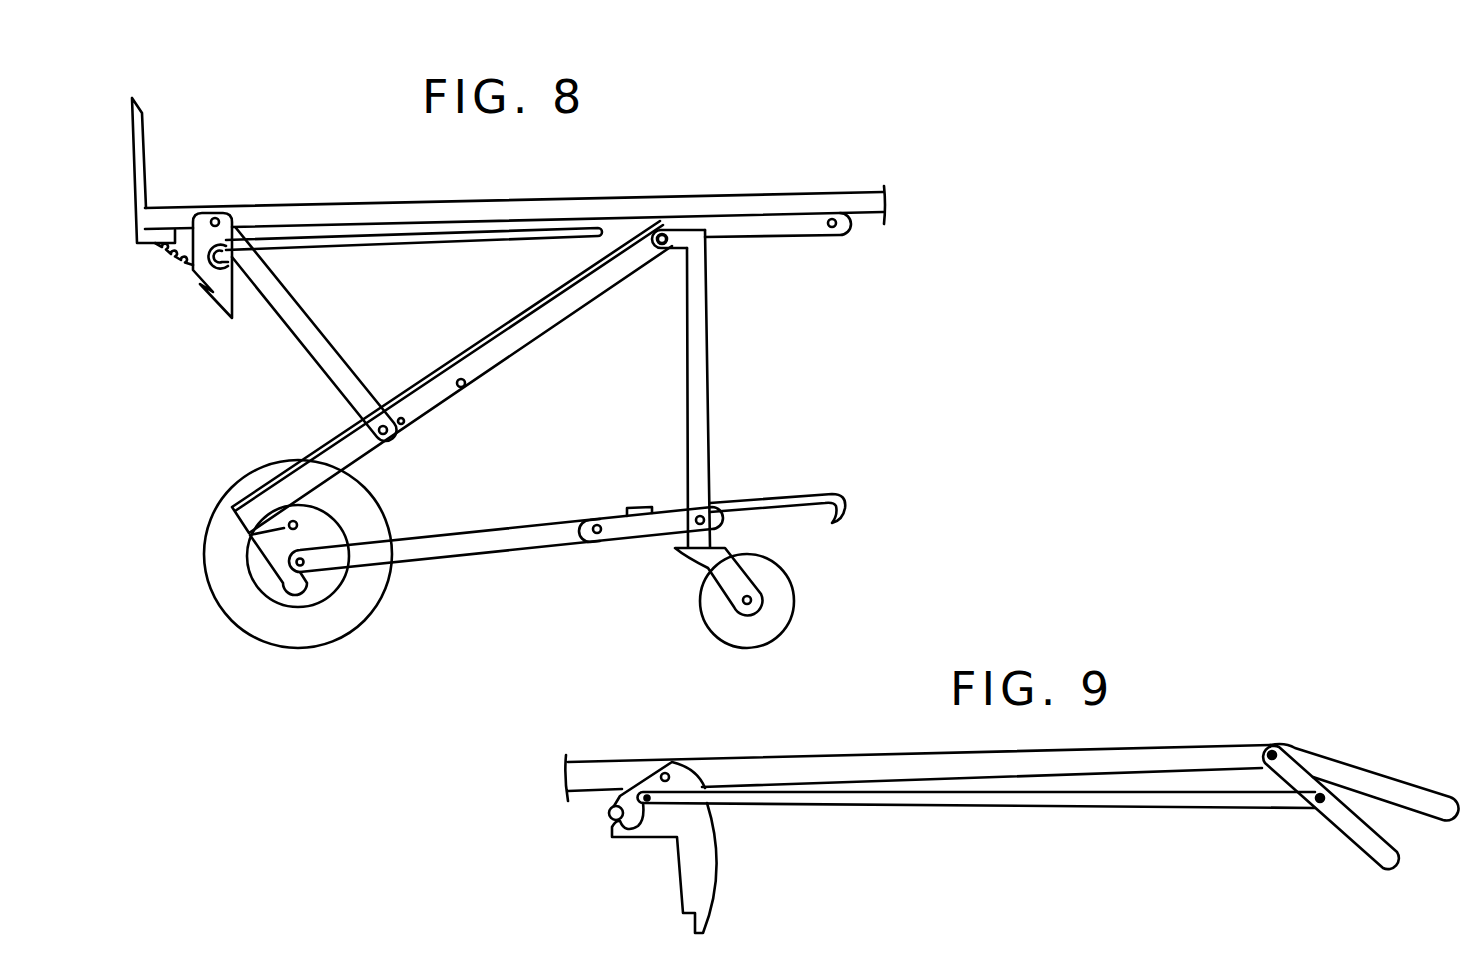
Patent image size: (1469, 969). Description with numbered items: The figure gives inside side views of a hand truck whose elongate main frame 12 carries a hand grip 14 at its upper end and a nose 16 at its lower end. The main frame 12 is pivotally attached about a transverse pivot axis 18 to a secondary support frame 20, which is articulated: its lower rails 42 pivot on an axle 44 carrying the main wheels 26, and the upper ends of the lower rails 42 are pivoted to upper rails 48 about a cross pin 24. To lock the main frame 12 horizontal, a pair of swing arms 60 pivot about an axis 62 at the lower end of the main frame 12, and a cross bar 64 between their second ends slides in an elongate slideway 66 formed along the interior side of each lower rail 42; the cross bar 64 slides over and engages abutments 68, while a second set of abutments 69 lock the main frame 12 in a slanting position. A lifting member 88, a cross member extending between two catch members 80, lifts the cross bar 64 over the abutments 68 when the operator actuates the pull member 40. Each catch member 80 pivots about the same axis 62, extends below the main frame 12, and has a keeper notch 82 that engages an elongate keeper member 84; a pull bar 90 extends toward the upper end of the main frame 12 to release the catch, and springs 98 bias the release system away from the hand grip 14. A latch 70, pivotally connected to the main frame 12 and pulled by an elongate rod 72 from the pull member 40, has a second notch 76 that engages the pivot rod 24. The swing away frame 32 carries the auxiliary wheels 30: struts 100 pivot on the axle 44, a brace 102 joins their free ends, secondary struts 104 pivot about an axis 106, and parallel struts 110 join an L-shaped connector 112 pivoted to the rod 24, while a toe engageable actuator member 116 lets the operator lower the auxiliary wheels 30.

In FIG. 8, the main frame 12 is at (448, 217).
In FIG. 9, the main frame 12 is at (835, 765).
In FIG. 9, the hand grip 14 is at (1433, 798).
In FIG. 8, the nose 16 is at (140, 165).
In FIG. 8, the pivot axis 18 is at (835, 220).
In FIG. 8, the support frame 20 is at (756, 249).
In FIG. 9, the cross pin 24 is at (611, 818).
In FIG. 8, the main wheels 26 is at (232, 600).
In FIG. 8, the auxiliary wheels 30 is at (777, 600).
In FIG. 8, the swing away frame 32 is at (722, 400).
In FIG. 9, the pull member 40 is at (1373, 847).
In FIG. 8, the lower rails 42 is at (432, 373).
In FIG. 8, the axle 44 is at (303, 570).
In FIG. 8, the upper rails 48 is at (768, 227).
In FIG. 8, the swing arms 60 is at (318, 345).
In FIG. 8, the pivot axis 62 is at (216, 216).
In FIG. 8, the cross bar 64 is at (393, 440).
In FIG. 8, the slideway 66 is at (523, 332).
In FIG. 8, the abutments 68 is at (397, 431).
In FIG. 8, the second set of abutments 69 is at (468, 385).
In FIG. 9, the latch 70 is at (708, 872).
In FIG. 9, the elongate rod 72 is at (1040, 805).
In FIG. 9, the second notch 76 is at (640, 838).
In FIG. 8, the catch member 80 is at (228, 320).
In FIG. 8, the keeper notch 82 is at (200, 285).
In FIG. 8, the keeper member 84 is at (288, 530).
In FIG. 8, the cross member 88 is at (265, 252).
In FIG. 8, the pull bar 90 is at (412, 266).
In FIG. 8, the springs 98 is at (168, 262).
In FIG. 8, the struts 100 is at (453, 548).
In FIG. 8, the brace 102 is at (642, 507).
In FIG. 8, the secondary struts 104 is at (670, 523).
In FIG. 8, the pivot axis 106 is at (597, 524).
In FIG. 8, the struts 110 is at (702, 335).
In FIG. 8, the L-shaped connector 112 is at (693, 240).
In FIG. 8, the toe engageable actuator member 116 is at (813, 492).